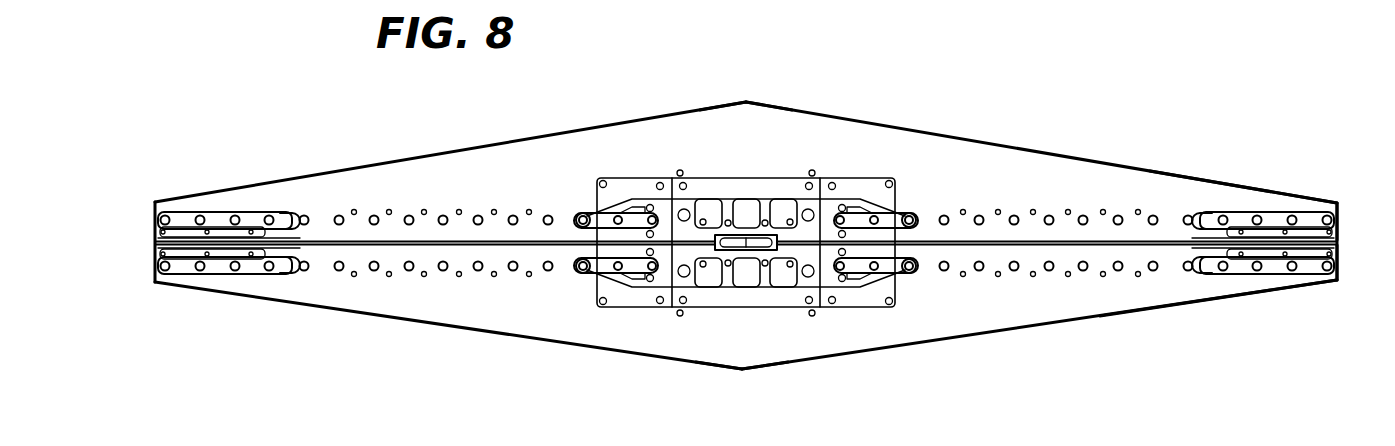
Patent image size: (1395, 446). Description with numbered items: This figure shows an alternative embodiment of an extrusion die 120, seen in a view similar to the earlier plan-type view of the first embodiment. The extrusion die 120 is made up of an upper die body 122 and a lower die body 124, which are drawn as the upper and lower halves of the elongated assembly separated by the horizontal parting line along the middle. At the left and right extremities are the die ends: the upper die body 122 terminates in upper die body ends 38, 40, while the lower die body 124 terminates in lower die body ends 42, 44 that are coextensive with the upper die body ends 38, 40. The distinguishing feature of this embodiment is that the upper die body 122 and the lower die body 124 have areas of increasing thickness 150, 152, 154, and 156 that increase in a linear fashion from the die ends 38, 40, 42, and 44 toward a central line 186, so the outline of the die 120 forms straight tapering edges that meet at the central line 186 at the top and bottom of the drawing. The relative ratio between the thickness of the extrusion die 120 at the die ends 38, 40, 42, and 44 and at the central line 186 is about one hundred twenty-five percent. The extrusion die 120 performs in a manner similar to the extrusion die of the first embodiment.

The extrusion die 120 is at (753, 238).
The central line 186 is at (746, 100).
The area of increasing thickness 152 is at (497, 143).
The area of increasing thickness 150 is at (1007, 147).
The upper die body 122 is at (1157, 173).
The area of increasing thickness 156 is at (484, 333).
The lower die body 124 is at (980, 338).
The area of increasing thickness 154 is at (1180, 308).
The upper die body end 40 is at (155, 222).
The lower die body end 44 is at (157, 262).
The upper die body end 38 is at (1340, 226).
The lower die body end 42 is at (1340, 262).